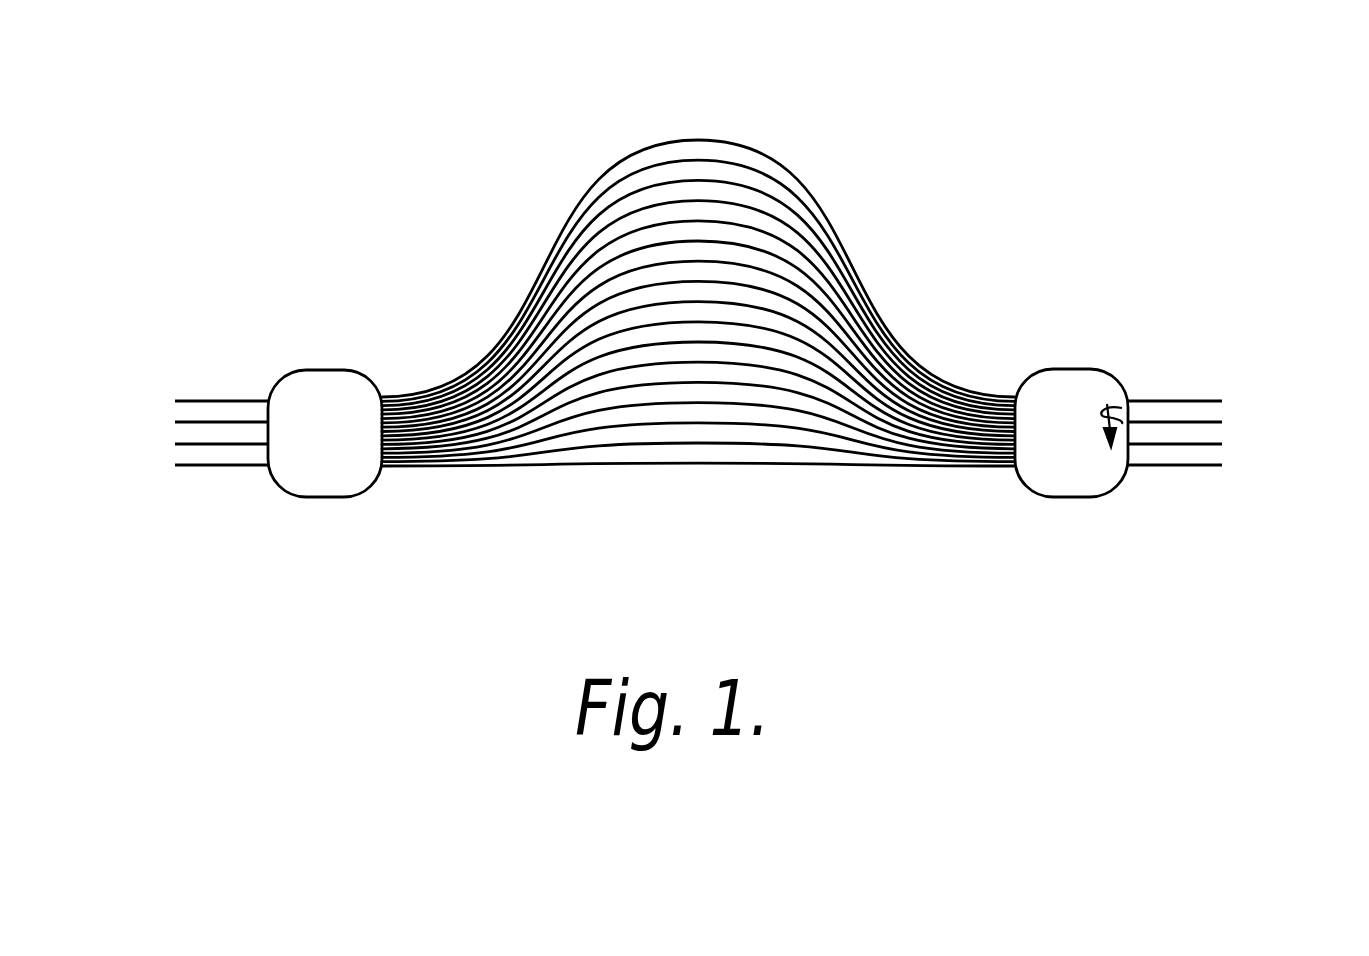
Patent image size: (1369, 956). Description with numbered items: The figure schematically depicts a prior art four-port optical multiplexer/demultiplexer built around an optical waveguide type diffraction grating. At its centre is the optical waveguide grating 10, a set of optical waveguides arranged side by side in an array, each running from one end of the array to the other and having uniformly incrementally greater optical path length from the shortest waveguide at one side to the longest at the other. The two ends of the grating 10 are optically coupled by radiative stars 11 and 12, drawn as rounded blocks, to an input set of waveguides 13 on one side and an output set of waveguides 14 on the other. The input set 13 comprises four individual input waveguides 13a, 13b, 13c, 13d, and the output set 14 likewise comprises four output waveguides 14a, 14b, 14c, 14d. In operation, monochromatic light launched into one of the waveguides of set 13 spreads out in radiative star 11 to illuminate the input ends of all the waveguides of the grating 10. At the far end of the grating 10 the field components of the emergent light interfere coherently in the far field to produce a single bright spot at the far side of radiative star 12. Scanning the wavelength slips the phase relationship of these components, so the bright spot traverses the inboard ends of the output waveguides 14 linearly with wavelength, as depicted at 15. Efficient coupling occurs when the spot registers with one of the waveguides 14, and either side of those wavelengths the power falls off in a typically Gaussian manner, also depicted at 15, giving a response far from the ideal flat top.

The optical waveguide grating 10 is at (687, 232).
The radiative star 11 is at (348, 413).
The radiative star 12 is at (1053, 397).
The input set of waveguides 13 is at (213, 412).
The input waveguide 13a is at (187, 400).
The input waveguide 13b is at (177, 422).
The input waveguide 13c is at (177, 447).
The input waveguide 13d is at (187, 468).
The output set of waveguides 14 is at (1197, 410).
The output waveguide 14a is at (1222, 397).
The output waveguide 14b is at (1222, 418).
The output waveguide 14c is at (1222, 445).
The output waveguide 14d is at (1203, 463).
The bright spot traverse and Gaussian power fall-off depiction 15 is at (1105, 405).